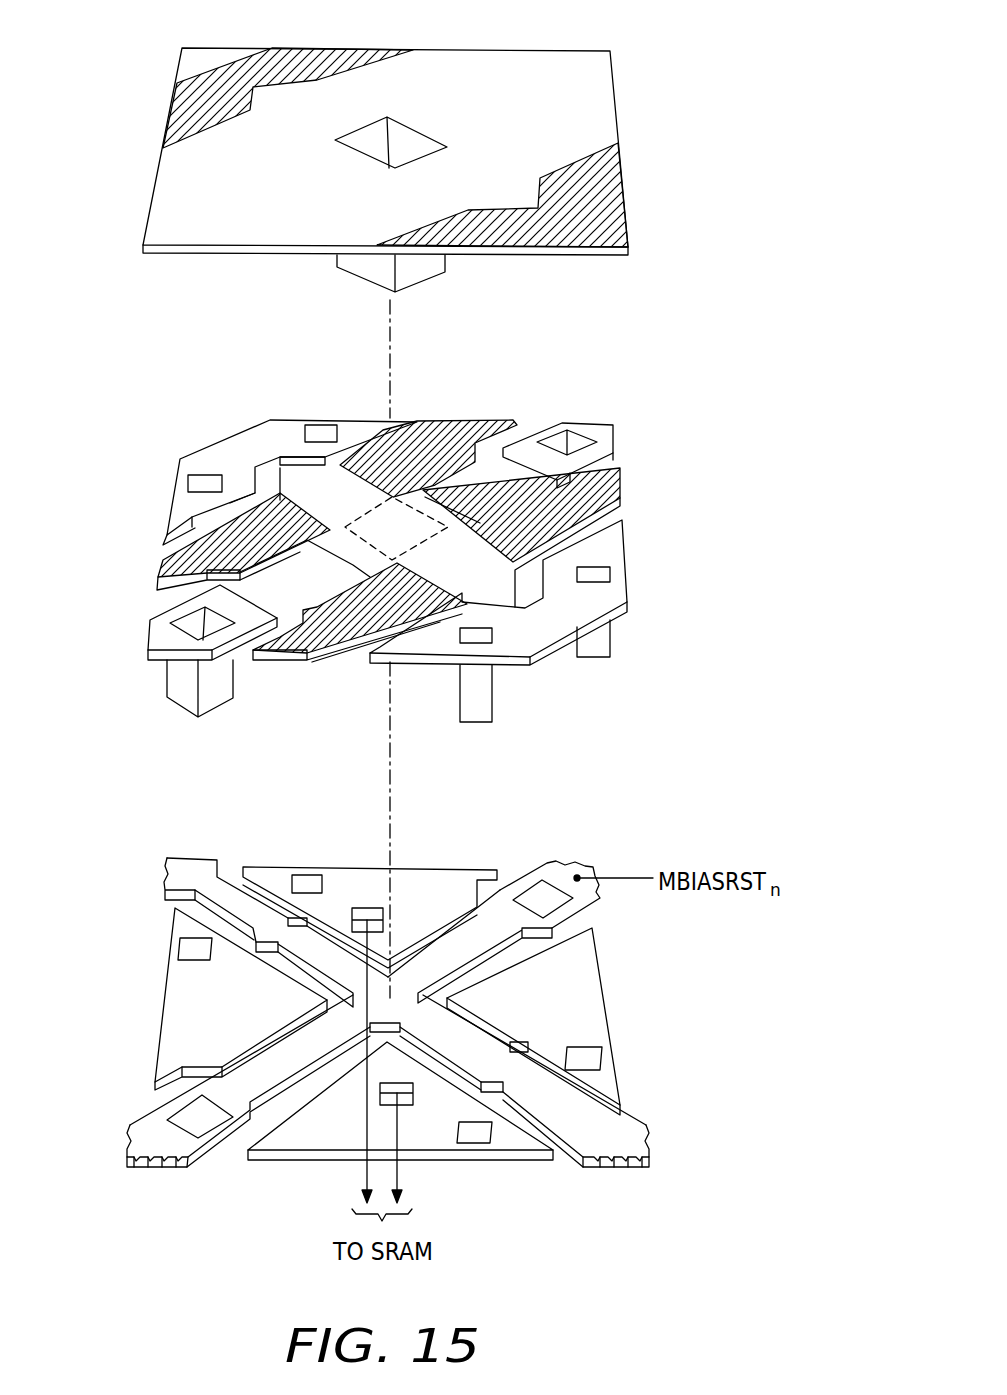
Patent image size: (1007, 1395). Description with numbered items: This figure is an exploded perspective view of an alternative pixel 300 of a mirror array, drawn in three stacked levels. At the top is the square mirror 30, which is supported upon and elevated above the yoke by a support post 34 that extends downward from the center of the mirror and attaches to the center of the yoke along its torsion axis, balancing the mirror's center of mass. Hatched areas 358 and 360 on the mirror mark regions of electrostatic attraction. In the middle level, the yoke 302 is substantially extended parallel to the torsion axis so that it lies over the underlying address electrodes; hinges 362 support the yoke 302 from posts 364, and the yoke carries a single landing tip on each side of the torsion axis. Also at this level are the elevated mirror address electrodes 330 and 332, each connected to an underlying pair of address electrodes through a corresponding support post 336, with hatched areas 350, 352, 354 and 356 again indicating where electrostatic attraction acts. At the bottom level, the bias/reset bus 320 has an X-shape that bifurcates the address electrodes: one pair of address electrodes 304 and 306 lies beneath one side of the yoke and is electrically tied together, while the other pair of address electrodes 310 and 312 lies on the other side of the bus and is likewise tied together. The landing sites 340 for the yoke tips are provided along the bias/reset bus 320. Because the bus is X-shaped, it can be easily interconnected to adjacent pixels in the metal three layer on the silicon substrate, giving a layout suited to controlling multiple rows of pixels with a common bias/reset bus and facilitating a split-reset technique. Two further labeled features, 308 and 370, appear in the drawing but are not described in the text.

The mirror 30 is at (533, 57).
The support post 34 is at (365, 268).
The area of electrostatic attraction 358 is at (173, 108).
The area of electrostatic attraction 360 is at (617, 163).
The pixel 300 is at (695, 413).
The yoke 302 is at (360, 522).
The address electrode 304 is at (170, 990).
The address electrode 306 is at (435, 867).
The contact 308 is at (293, 473).
The address electrode 310 is at (313, 1140).
The address electrode 312 is at (590, 978).
The bias/reset bus 320 is at (620, 1145).
The elevated mirror address electrode 330 is at (620, 548).
The elevated mirror address electrode 332 is at (205, 445).
The support post 336 is at (490, 700).
The landing site 340 is at (268, 910).
The area of electrostatic attraction 350 is at (165, 578).
The area of electrostatic attraction 352 is at (455, 430).
The area of electrostatic attraction 354 is at (302, 650).
The area of electrostatic attraction 356 is at (620, 470).
The hinge 362 is at (525, 462).
The post 364 is at (150, 640).
The anchor pad 370 is at (150, 1118).